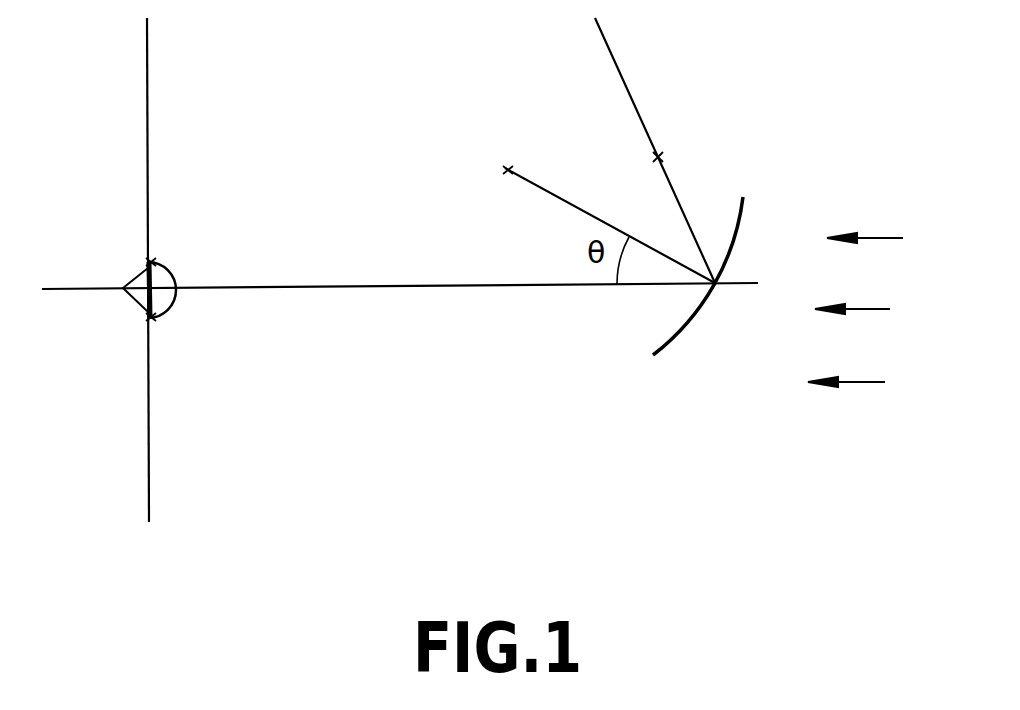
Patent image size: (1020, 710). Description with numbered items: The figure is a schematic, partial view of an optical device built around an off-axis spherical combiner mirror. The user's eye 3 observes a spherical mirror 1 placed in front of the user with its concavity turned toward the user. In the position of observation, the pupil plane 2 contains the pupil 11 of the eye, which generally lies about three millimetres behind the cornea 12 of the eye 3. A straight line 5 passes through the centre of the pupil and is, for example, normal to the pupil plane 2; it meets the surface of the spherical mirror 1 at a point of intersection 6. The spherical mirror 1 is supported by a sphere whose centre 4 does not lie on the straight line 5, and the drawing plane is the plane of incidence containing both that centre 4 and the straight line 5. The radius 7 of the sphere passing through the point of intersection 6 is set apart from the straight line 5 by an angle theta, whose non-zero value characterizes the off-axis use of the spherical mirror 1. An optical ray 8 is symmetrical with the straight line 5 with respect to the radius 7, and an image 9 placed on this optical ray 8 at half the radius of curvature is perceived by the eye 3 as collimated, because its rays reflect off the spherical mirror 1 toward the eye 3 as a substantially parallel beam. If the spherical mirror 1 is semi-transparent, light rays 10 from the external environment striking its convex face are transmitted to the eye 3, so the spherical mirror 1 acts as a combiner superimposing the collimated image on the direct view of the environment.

The spherical mirror 1 is at (655, 355).
The pupil plane 2 is at (150, 487).
The user's eye 3 is at (135, 302).
The centre of the sphere 4 is at (503, 170).
The straight line 5 is at (347, 287).
The point of intersection 6 is at (727, 276).
The radius of the sphere 7 is at (548, 192).
The optical ray 8 is at (602, 28).
The image 9 is at (662, 157).
The light rays 10 is at (876, 310).
The pupil 11 is at (140, 277).
The cornea 12 is at (163, 273).